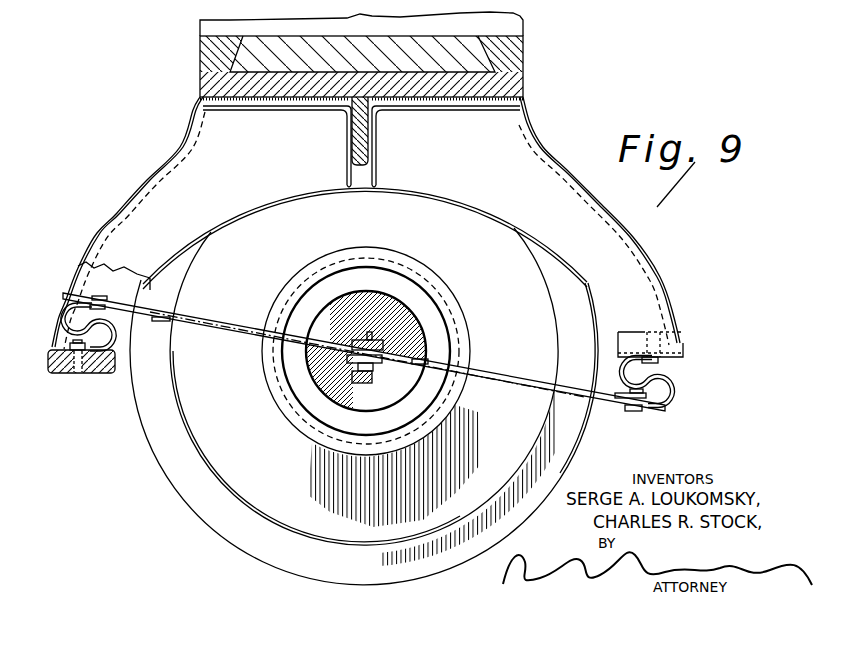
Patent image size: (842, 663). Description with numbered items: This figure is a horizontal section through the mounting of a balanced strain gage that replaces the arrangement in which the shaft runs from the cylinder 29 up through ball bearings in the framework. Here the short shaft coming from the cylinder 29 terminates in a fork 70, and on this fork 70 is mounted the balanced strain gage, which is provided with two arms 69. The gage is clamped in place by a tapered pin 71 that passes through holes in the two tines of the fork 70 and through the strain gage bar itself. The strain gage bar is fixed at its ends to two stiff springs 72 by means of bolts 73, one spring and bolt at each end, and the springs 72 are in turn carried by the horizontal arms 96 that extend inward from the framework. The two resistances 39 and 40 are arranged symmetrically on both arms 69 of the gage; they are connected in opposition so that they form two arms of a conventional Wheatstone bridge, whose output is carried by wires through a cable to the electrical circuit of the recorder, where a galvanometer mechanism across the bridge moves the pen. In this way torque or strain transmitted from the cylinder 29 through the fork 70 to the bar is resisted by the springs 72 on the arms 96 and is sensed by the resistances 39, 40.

The horizontal arms 96 is at (118, 216).
The bolts 73 is at (94, 294).
The stiff springs 72 is at (60, 311).
The resistance 39 is at (198, 312).
The arms 69 is at (229, 324).
The resistance 40 is at (225, 331).
The cylinder 29 is at (317, 377).
The fork 70 is at (367, 339).
The tapered pin 71 is at (364, 383).